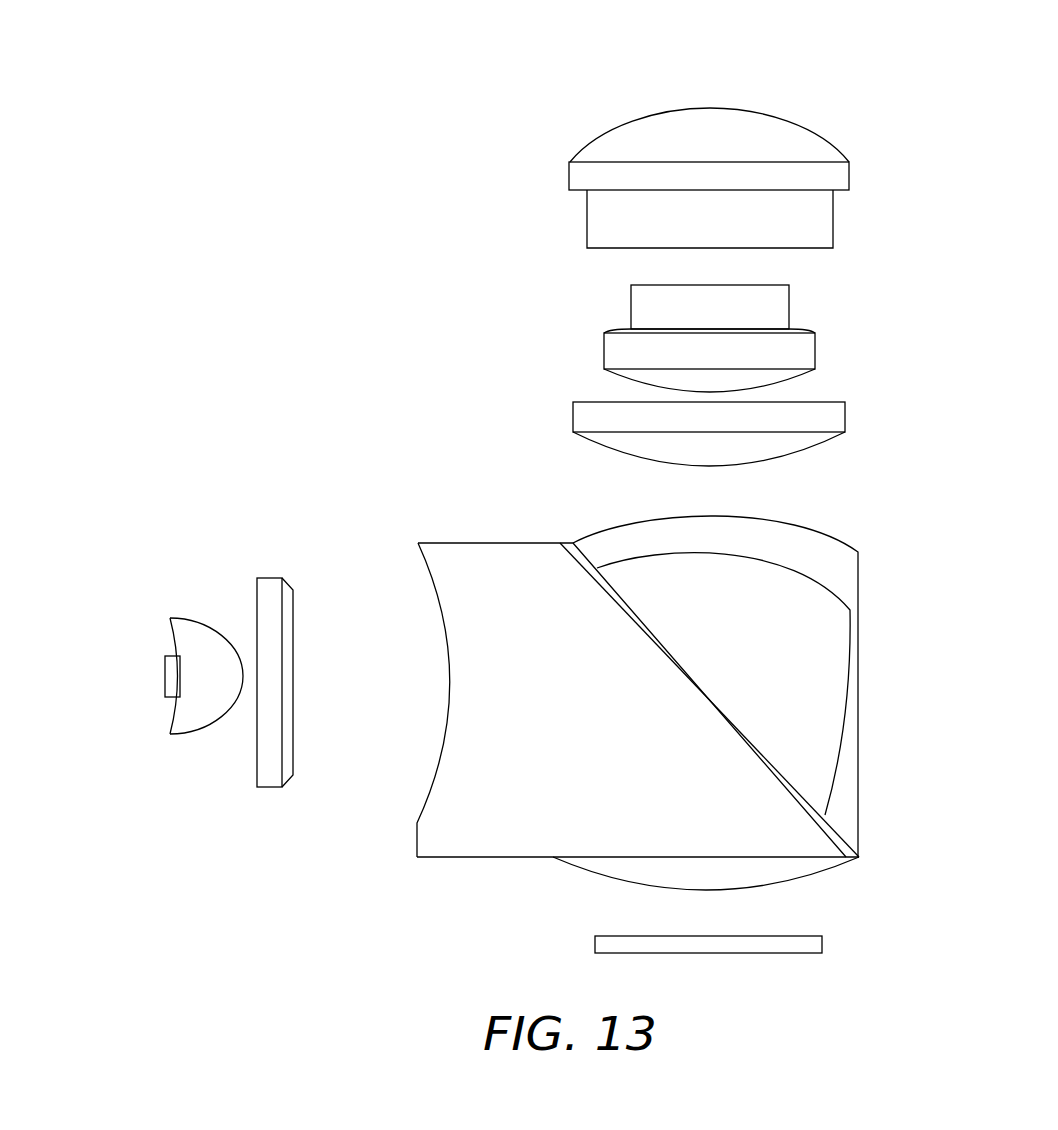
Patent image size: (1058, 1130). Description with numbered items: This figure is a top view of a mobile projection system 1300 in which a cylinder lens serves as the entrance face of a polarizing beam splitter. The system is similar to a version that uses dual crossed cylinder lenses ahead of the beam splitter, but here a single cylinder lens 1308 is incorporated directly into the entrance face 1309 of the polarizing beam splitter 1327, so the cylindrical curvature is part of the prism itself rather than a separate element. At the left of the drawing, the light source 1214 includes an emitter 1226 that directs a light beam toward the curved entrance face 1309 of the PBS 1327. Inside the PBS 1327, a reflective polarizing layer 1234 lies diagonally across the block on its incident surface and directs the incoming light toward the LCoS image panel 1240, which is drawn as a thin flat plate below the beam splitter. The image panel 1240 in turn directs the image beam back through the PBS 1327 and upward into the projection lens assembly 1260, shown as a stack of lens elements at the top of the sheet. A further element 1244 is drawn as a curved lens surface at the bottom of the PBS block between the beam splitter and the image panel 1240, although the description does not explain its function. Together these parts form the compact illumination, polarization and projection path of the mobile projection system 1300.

The mobile projection system 1300 is at (795, 61).
The projection lens assembly 1260 is at (857, 105).
The light source 1214 is at (190, 650).
The emitter 1226 is at (165, 680).
The cylinder lens 1308 is at (595, 674).
The entrance face 1309 is at (430, 790).
The polarizing beam splitter 1327 is at (815, 534).
The reflective polarizing layer 1234 is at (679, 660).
The lens 1244 is at (805, 870).
The LCoS image panel 1240 is at (822, 945).